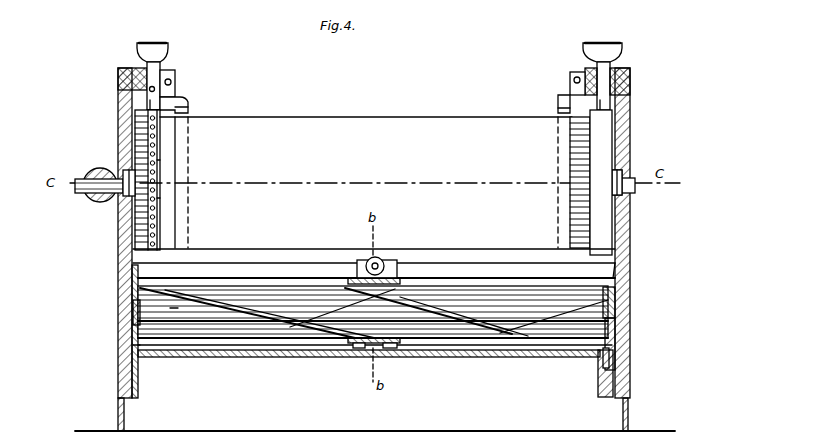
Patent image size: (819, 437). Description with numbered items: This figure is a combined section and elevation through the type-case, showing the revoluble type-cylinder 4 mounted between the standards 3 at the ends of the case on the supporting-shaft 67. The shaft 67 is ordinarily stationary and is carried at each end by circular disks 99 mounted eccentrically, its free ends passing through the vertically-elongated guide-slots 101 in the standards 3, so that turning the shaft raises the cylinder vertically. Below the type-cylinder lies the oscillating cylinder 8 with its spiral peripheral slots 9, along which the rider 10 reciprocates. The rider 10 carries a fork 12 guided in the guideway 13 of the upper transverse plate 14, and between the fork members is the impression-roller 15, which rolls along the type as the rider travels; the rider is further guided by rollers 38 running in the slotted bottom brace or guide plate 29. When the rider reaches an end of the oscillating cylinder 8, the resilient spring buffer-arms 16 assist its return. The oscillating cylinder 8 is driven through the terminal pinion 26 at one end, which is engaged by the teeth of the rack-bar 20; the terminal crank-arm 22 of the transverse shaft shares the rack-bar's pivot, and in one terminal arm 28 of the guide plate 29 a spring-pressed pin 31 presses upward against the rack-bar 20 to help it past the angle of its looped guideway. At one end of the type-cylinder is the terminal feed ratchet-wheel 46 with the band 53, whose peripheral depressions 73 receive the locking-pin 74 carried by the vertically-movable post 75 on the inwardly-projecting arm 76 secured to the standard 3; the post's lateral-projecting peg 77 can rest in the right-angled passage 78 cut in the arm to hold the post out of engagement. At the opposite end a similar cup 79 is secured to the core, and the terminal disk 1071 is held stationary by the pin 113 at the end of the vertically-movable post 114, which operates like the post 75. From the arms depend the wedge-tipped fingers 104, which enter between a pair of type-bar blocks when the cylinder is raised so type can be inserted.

The standard 3 is at (118, 222).
The type-cylinder 4 is at (286, 120).
The oscillating cylinder 8 is at (226, 276).
The spiral peripheral slots 9 is at (275, 320).
The rider 10 is at (146, 280).
The fork 12 is at (398, 264).
The guideway 13 is at (488, 272).
The upper transverse plate 14 is at (447, 262).
The impression-roller 15 is at (378, 258).
The spring buffer-arms 16 is at (140, 346).
The rack-bar 20 is at (632, 332).
The terminal crank-arm 22 is at (618, 356).
The terminal pinion 26 is at (616, 298).
The terminal arm 28 is at (598, 390).
The slotted bottom brace or guide plate 29 is at (484, 346).
The pin 31 is at (620, 364).
The rollers 38 is at (360, 348).
The terminal feed ratchet-wheel 46 is at (135, 138).
The band 53 is at (160, 198).
The shaft 67 is at (88, 192).
The peripheral depressions 73 is at (160, 168).
The locking-pin 74 is at (150, 110).
The vertically-movable post 75 is at (160, 68).
The inwardly-projecting arm 76 is at (148, 70).
The lateral-projecting peg 77 is at (163, 92).
The right-angled passage 78 is at (118, 72).
The cup 79 is at (578, 198).
The circular disks 99 is at (124, 172).
The guide-slots 101 is at (118, 178).
The wedge-tipped fingers 104 is at (188, 110).
The pin 113 is at (612, 98).
The vertically-movable post 114 is at (606, 72).
The terminal disk 1071 is at (606, 130).